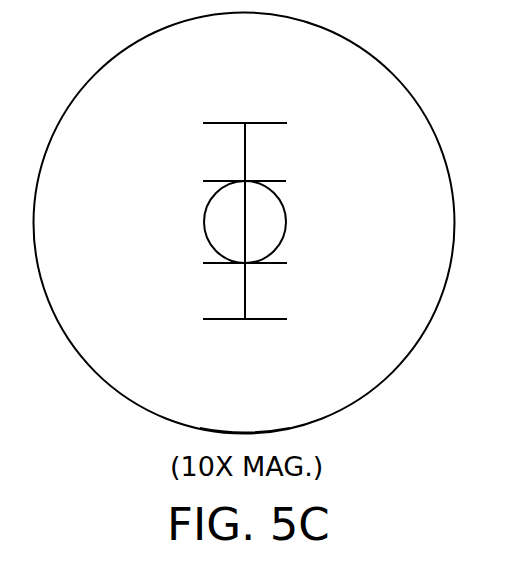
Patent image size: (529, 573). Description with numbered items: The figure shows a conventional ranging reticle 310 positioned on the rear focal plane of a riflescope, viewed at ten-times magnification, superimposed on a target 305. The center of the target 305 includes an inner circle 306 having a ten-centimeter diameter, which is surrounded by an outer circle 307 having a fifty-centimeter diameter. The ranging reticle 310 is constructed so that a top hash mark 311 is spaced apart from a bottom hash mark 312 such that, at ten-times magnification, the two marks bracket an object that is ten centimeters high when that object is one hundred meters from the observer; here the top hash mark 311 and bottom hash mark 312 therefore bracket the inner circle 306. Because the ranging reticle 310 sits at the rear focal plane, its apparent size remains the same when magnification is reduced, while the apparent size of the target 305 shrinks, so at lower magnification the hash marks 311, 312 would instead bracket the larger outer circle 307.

The target 305 is at (101, 409).
The inner circle 306 is at (217, 253).
The outer circle 307 is at (260, 432).
The ranging reticle 310 is at (196, 255).
The top hash mark 311 is at (218, 180).
The bottom hash mark 312 is at (265, 265).